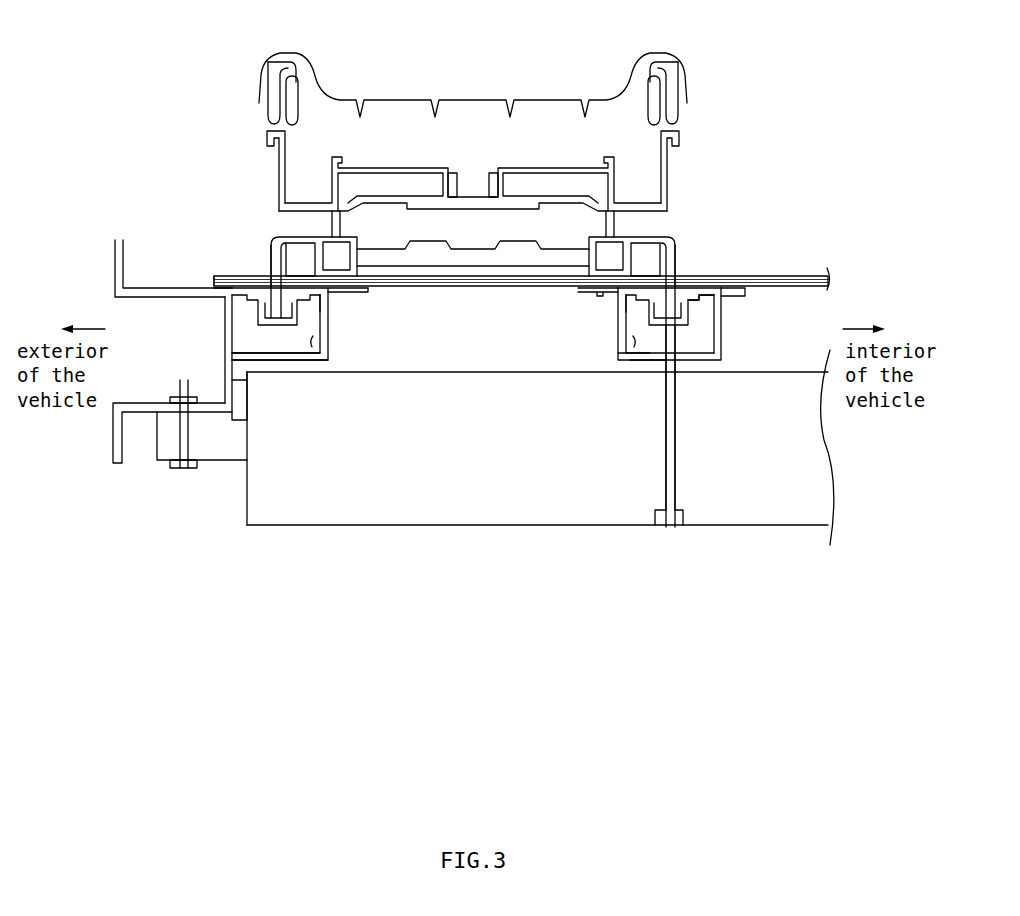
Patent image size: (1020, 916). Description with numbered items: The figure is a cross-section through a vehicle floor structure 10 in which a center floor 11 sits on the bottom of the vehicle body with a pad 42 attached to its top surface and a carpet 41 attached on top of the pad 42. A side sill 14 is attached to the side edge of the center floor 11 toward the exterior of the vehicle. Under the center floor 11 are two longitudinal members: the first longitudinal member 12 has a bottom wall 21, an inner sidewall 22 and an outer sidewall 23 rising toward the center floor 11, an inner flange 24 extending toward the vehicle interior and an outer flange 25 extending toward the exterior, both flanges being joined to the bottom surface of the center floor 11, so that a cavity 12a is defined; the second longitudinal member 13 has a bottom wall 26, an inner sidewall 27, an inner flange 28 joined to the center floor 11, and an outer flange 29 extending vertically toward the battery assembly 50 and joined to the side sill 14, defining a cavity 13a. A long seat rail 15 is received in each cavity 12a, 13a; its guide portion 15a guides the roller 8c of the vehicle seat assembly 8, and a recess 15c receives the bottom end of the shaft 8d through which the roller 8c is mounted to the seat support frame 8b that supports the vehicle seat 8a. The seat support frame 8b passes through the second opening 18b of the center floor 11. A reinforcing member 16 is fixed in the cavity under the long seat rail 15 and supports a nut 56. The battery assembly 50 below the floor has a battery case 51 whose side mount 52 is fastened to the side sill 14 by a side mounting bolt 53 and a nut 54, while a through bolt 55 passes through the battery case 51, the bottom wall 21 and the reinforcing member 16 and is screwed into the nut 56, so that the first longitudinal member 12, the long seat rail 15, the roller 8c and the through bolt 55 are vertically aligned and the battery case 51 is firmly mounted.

The vehicle floor structure 10 is at (157, 81).
The vehicle seat assembly 8 is at (690, 153).
The vehicle seat 8a is at (672, 188).
The seat support frame 8b is at (271, 260).
The roller 8c is at (252, 292).
The shaft 8d is at (262, 308).
The center floor 11 is at (796, 274).
The first longitudinal member 12 is at (730, 371).
The cavity 12a is at (626, 333).
The second longitudinal member 13 is at (346, 363).
The cavity 13a is at (322, 345).
The side sill 14 is at (143, 294).
The long seat rail 15 is at (270, 312).
The guide portion 15a is at (222, 275).
The recess 15c is at (328, 302).
The reinforcing member 16 is at (614, 362).
The second opening 18b is at (690, 280).
The bottom wall 21 is at (645, 361).
The inner sidewall 22 is at (728, 352).
The outer sidewall 23 is at (619, 320).
The inner flange 24 is at (742, 292).
The outer flange 25 is at (597, 300).
The bottom wall 26 is at (300, 361).
The inner sidewall 27 is at (331, 323).
The inner flange 28 is at (357, 293).
The outer flange 29 is at (230, 365).
The carpet 41 is at (212, 277).
The pad 42 is at (198, 282).
The battery assembly 50 is at (422, 545).
The battery case 51 is at (498, 528).
The side mount 52 is at (222, 458).
The side mounting bolt 53 is at (175, 440).
The nut 54 is at (178, 400).
The through bolt 55 is at (665, 483).
The nut 56 is at (680, 350).